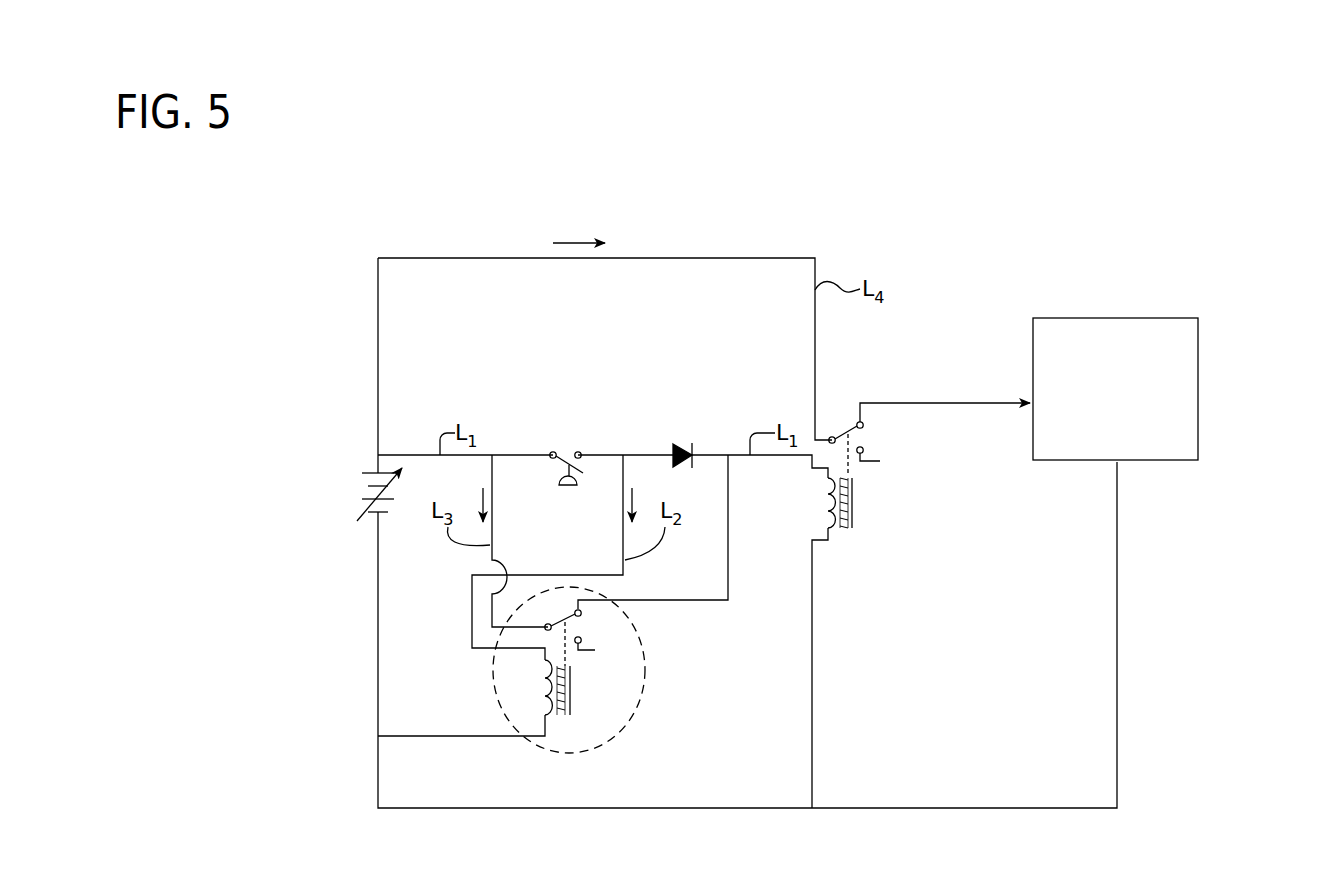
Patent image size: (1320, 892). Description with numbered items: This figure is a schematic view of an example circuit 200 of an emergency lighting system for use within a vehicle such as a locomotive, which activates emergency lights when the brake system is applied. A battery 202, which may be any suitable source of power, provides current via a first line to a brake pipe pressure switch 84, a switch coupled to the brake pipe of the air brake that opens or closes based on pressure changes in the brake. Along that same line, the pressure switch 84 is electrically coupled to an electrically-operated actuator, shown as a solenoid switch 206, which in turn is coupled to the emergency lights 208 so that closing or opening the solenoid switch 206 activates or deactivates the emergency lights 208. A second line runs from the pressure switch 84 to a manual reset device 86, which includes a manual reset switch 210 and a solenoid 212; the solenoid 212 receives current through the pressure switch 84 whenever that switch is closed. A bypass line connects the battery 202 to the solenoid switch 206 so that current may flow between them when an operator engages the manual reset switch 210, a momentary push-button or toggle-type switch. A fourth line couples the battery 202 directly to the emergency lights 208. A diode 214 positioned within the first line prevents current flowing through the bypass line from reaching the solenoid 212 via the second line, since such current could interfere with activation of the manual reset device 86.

The circuit 200 is at (1178, 155).
The battery 202 is at (340, 545).
The brake pipe pressure switch 84 is at (568, 442).
The diode 214 is at (690, 446).
The solenoid switch 206 is at (892, 490).
The emergency lights 208 is at (1144, 318).
The manual reset device 86 is at (645, 690).
The manual reset switch 210 is at (592, 622).
The solenoid 212 is at (584, 698).